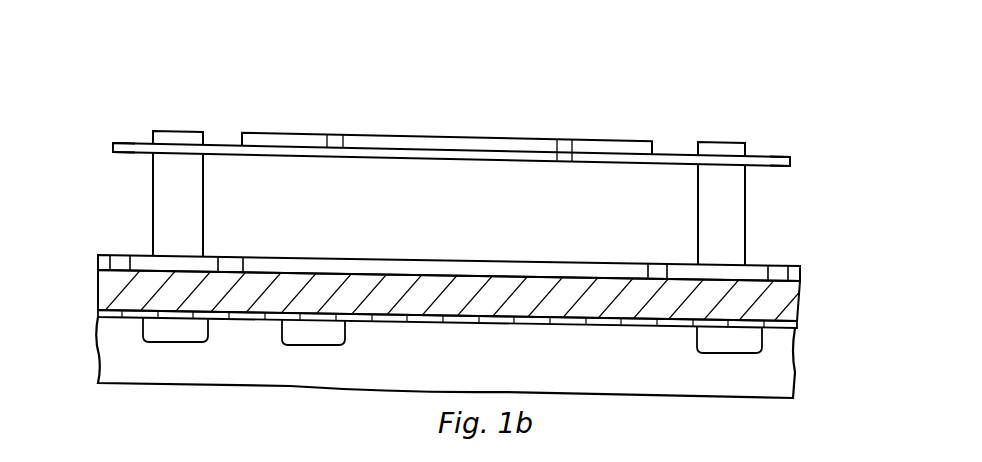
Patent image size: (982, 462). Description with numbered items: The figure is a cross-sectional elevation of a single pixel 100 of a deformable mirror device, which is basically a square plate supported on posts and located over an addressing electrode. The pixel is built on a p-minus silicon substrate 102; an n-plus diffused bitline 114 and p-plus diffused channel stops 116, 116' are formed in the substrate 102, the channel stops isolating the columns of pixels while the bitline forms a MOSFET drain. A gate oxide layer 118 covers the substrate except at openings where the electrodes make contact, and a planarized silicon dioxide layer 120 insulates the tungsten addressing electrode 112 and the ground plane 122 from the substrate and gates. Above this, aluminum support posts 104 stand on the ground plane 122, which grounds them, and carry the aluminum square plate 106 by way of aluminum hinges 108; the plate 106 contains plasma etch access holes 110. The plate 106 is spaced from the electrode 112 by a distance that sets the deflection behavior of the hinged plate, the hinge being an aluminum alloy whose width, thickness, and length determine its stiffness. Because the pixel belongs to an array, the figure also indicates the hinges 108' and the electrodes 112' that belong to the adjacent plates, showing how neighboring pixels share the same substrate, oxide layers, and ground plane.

The pixel 100 is at (754, 110).
The p- silicon substrate 102 is at (420, 370).
The aluminum support posts 104 is at (157, 198).
The aluminum square plate 106 is at (442, 137).
The aluminum hinges 108 is at (449, 127).
The hinges for adjacent plates 108' is at (455, 136).
The plasma etch access holes 110 is at (338, 126).
The tungsten addressing electrode 112 is at (449, 251).
The electrodes for adjacent plates 112' is at (464, 249).
The n+ diffused bitline 114 is at (336, 346).
The p+ diffused channel stop 116 is at (122, 335).
The p+ diffused channel stop 116' is at (786, 335).
The gate oxide layer 118 is at (102, 306).
The silicon dioxide layer 120 is at (788, 300).
The ground plane 122 is at (210, 261).